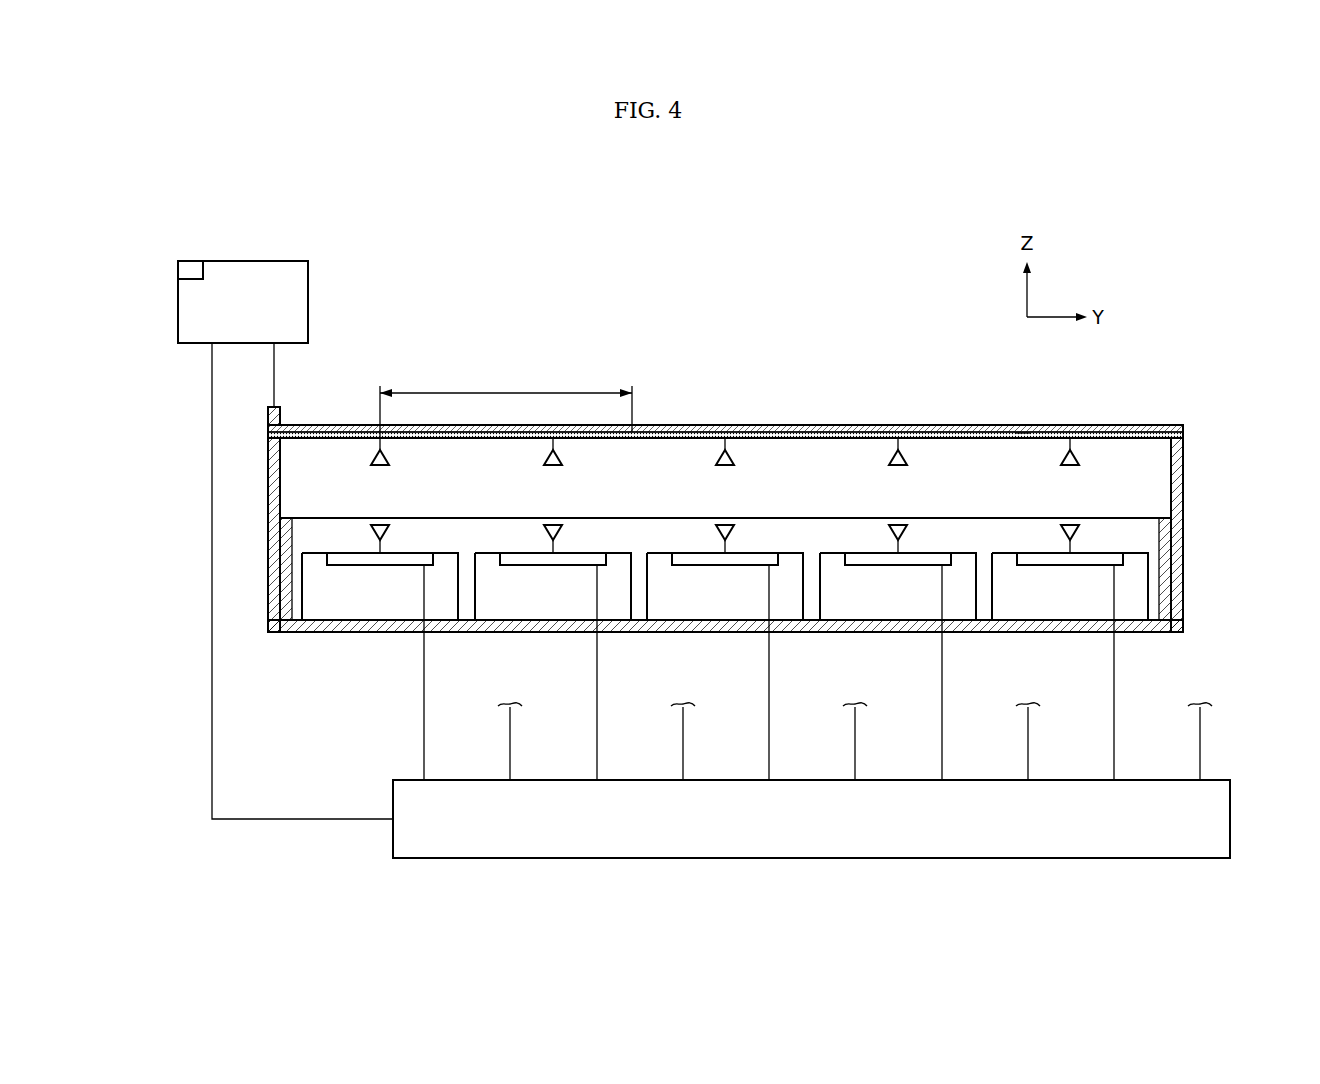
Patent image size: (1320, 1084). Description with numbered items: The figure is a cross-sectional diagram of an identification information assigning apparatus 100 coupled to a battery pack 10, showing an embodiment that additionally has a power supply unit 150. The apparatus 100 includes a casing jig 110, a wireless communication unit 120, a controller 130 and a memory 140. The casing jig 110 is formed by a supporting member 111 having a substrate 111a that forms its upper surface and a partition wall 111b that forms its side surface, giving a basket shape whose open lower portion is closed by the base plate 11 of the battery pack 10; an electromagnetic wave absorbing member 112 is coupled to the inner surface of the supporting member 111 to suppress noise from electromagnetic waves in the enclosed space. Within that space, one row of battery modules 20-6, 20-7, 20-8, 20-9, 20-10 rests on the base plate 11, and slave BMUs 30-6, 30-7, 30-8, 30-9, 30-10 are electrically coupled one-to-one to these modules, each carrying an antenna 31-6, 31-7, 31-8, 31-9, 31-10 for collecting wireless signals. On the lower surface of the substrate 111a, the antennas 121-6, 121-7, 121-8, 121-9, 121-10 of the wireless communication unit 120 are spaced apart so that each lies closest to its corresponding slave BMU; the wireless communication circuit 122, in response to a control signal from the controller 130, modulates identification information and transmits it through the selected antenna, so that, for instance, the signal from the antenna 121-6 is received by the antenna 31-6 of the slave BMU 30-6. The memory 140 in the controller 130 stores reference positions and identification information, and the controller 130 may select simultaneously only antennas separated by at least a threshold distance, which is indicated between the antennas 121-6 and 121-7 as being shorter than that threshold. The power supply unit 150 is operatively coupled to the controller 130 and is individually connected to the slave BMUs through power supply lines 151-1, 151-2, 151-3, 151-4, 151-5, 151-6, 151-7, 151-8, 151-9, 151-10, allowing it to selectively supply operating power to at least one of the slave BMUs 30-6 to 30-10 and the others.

The identification information assigning apparatus 100 is at (352, 206).
The controller 130 is at (256, 520).
The memory 140 is at (178, 269).
The wireless communication unit 120 is at (718, 396).
The wireless communication circuit 122 is at (282, 410).
The casing jig 110 is at (748, 506).
The supporting member 111 is at (748, 401).
The substrate 111a is at (1141, 425).
The partition wall 111b is at (1117, 376).
The electromagnetic wave absorbing member 112 is at (1022, 440).
The battery pack 10 is at (733, 564).
The base plate 11 is at (1135, 635).
The sixth antenna 121-6 is at (390, 460).
The seventh antenna 121-7 is at (563, 460).
The eighth antenna 121-8 is at (735, 460).
The ninth antenna 121-9 is at (908, 460).
The tenth antenna 121-10 is at (1080, 460).
The antenna of sixth slave BMU 31-6 is at (378, 518).
The antenna of seventh slave BMU 31-7 is at (551, 518).
The antenna of eighth slave BMU 31-8 is at (723, 518).
The antenna of ninth slave BMU 31-9 is at (896, 518).
The antenna of tenth slave BMU 31-10 is at (1068, 518).
The sixth battery module 20-6 is at (380, 612).
The seventh battery module 20-7 is at (553, 612).
The eighth battery module 20-8 is at (725, 612).
The ninth battery module 20-9 is at (898, 612).
The tenth battery module 20-10 is at (1067, 612).
The sixth slave BMU 30-6 is at (385, 567).
The seventh slave BMU 30-7 is at (558, 567).
The eighth slave BMU 30-8 is at (730, 567).
The ninth slave BMU 30-9 is at (903, 567).
The tenth slave BMU 30-10 is at (1075, 567).
The power supply unit 150 is at (458, 860).
The first power supply line 151-1 is at (512, 745).
The second power supply line 151-2 is at (685, 745).
The third power supply line 151-3 is at (857, 745).
The fourth power supply line 151-4 is at (1030, 745).
The fifth power supply line 151-5 is at (1202, 745).
The sixth power supply line 151-6 is at (426, 745).
The seventh power supply line 151-7 is at (599, 745).
The eighth power supply line 151-8 is at (771, 745).
The ninth power supply line 151-9 is at (944, 745).
The tenth power supply line 151-10 is at (1116, 745).